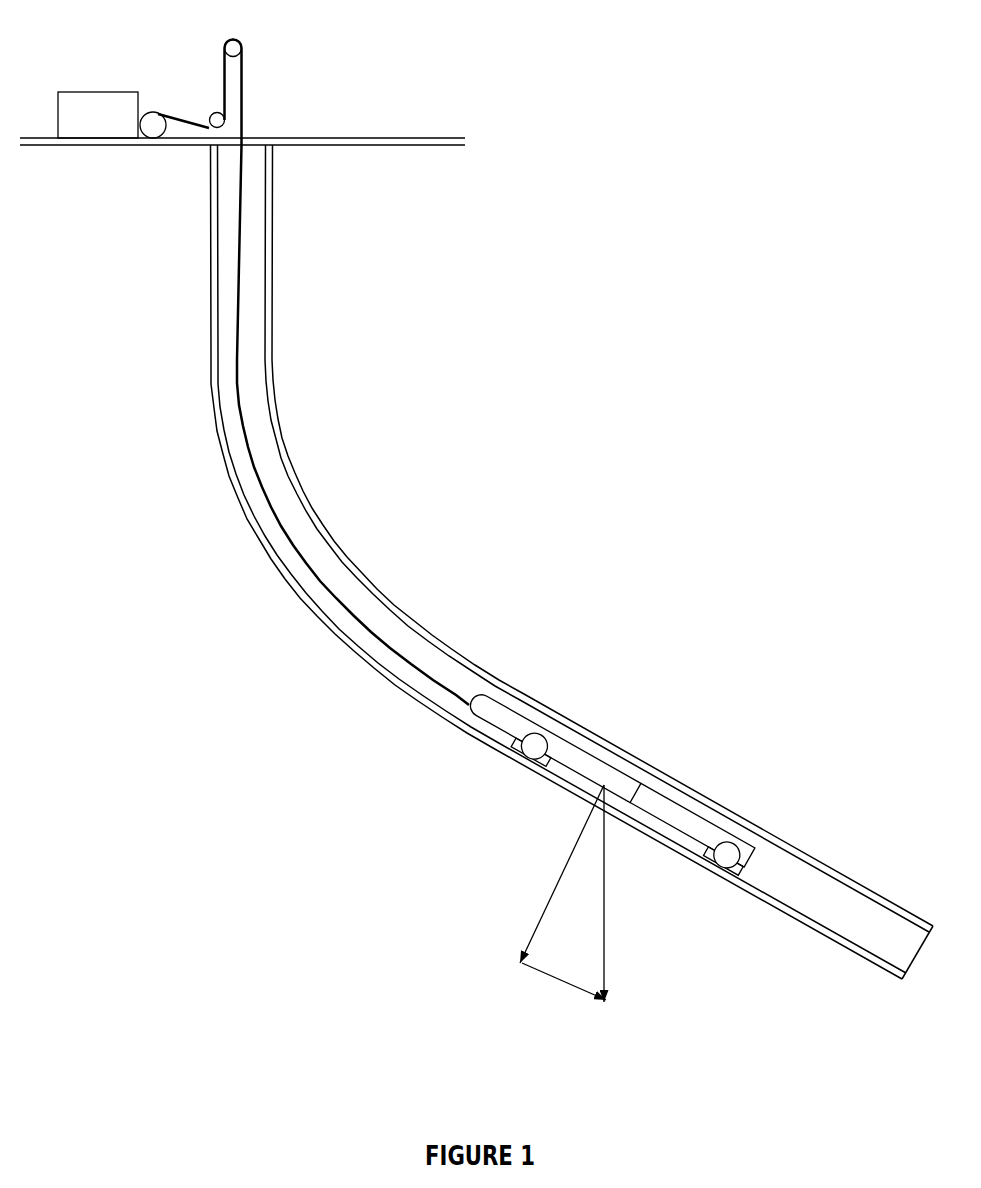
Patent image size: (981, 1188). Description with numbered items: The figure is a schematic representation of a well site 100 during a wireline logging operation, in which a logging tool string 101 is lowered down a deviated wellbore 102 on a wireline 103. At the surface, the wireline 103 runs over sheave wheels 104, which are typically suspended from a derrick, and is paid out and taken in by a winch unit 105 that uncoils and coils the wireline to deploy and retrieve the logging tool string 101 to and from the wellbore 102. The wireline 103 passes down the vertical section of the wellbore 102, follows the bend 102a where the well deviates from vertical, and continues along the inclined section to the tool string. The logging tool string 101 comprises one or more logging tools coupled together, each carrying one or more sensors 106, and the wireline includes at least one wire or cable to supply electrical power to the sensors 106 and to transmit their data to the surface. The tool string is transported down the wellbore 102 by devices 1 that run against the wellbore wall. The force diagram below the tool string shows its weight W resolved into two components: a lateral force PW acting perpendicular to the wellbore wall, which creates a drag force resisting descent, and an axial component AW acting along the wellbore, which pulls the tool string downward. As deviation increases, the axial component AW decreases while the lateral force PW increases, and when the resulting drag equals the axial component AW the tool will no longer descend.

The well site 100 is at (378, 75).
The logging tool string 101 is at (583, 768).
The wellbore 102 is at (347, 373).
The bent portion of cable 102a is at (282, 458).
The wireline 103 is at (278, 528).
The sheave wheels 104 is at (243, 42).
The winch unit 105 is at (90, 117).
The sensors 106 is at (670, 823).
The devices 1 is at (530, 752).
The weight force W is at (623, 893).
The lateral force PW is at (554, 874).
The axial component of tool-string weight AW is at (564, 996).